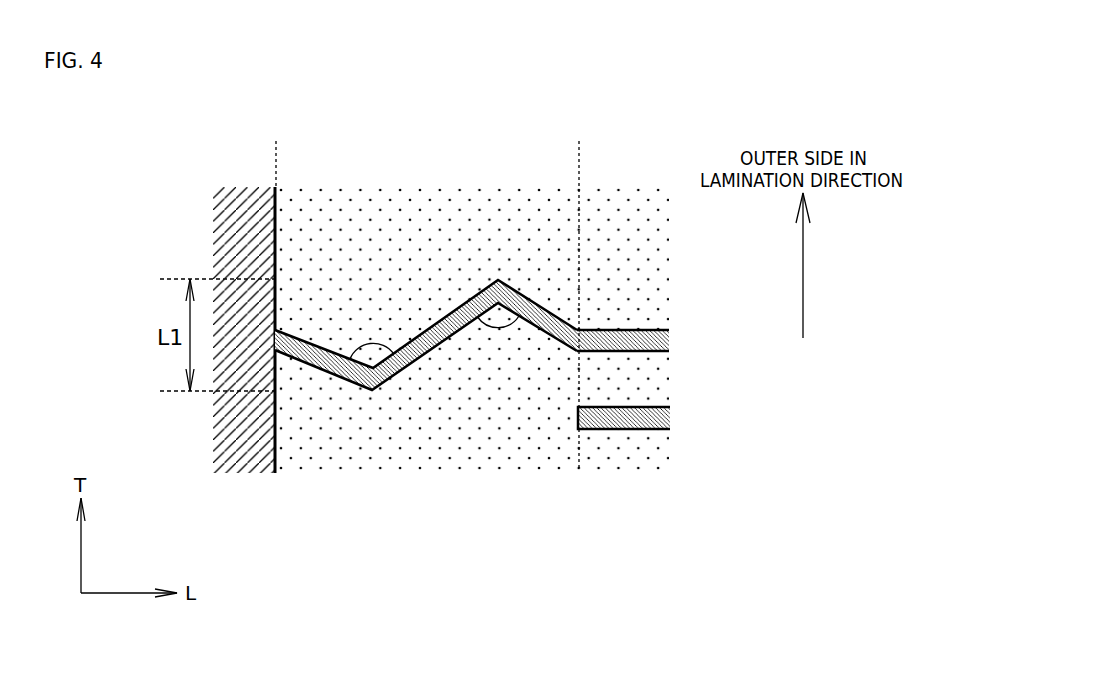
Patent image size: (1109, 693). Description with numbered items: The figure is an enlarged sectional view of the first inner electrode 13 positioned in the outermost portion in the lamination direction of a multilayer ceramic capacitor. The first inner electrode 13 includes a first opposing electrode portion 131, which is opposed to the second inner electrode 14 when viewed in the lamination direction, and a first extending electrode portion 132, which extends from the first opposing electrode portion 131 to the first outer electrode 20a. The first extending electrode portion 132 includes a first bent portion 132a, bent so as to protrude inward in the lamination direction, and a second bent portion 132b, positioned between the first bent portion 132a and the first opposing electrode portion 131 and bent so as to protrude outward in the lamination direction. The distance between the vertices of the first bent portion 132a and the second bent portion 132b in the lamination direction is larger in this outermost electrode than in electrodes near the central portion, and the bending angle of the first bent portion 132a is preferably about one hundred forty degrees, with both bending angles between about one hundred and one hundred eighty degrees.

The first outer electrode 20a is at (245, 212).
The first inner electrode 13 is at (514, 334).
The first opposing electrode portion 131 is at (645, 328).
The first extending electrode portion 132 is at (580, 141).
The first bent portion 132a is at (375, 398).
The second bent portion 132b is at (494, 362).
The second inner electrode 14 is at (635, 430).